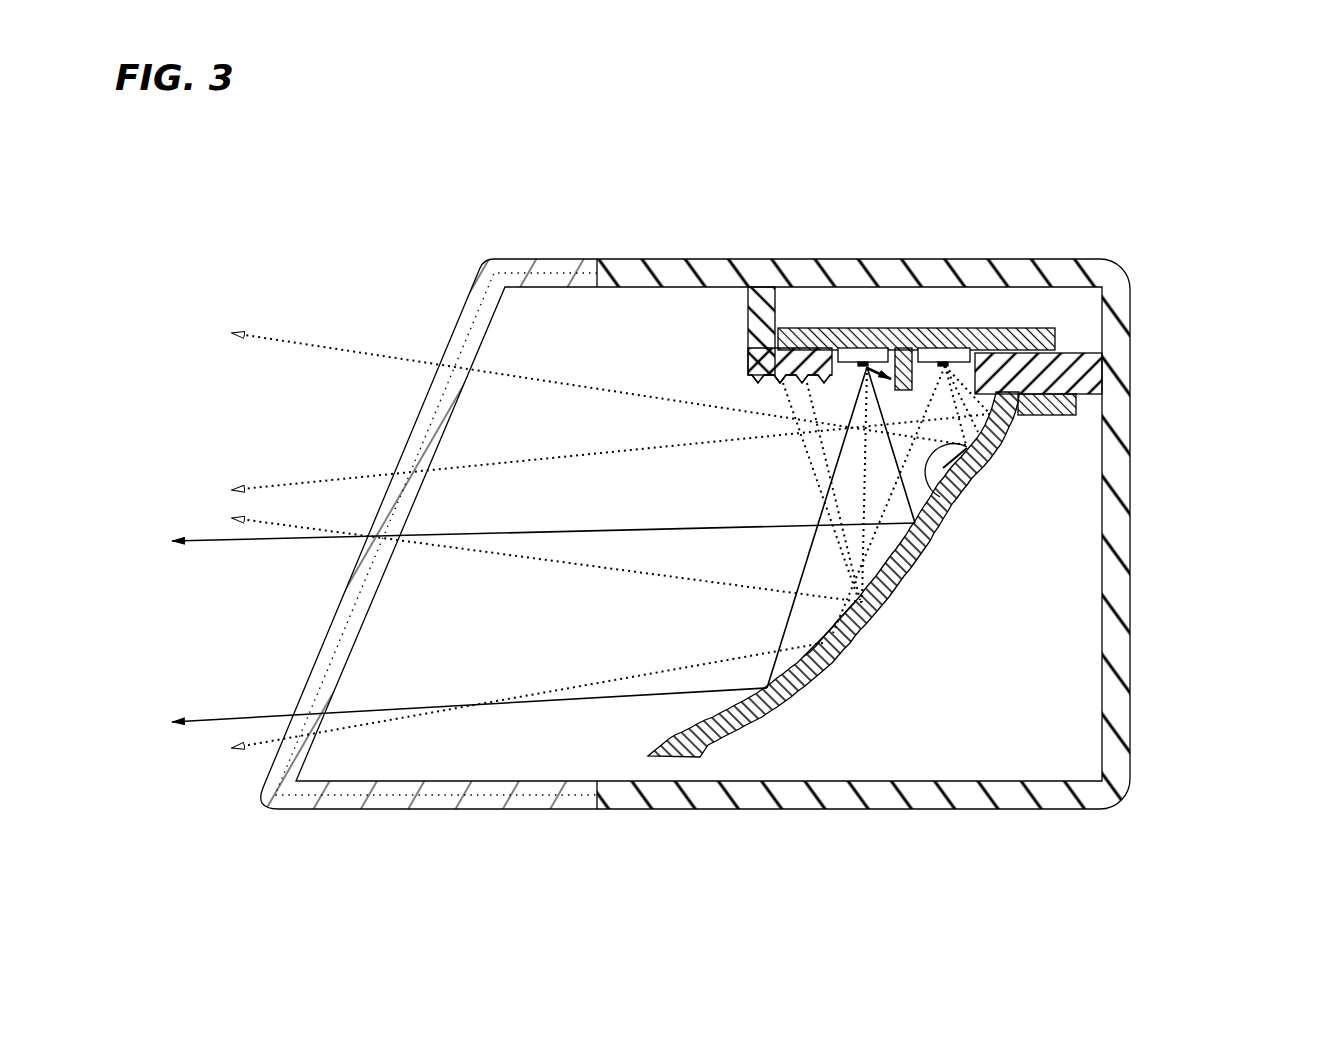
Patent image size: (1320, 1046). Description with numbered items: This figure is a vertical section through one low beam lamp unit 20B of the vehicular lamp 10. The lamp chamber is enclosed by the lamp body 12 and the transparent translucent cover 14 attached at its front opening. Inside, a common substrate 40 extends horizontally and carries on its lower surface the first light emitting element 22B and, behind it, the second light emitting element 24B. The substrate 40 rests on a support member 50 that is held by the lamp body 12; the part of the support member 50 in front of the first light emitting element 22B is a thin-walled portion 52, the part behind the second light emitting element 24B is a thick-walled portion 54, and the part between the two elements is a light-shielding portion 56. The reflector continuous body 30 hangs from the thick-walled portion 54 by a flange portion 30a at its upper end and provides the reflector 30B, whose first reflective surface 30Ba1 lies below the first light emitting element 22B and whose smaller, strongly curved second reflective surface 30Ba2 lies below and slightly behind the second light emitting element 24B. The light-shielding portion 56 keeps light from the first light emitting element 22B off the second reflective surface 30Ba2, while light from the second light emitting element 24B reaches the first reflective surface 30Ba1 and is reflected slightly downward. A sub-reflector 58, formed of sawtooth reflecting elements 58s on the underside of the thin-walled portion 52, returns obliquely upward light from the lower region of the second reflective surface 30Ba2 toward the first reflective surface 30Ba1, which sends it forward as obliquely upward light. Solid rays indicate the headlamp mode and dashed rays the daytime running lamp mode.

The vehicular lamp 10 is at (358, 203).
The lamp body 12 is at (1134, 305).
The translucent cover 14 is at (447, 340).
The lamp unit 20B is at (650, 492).
The first light emitting element 22B is at (872, 335).
The second light emitting element 24B is at (950, 335).
The reflector continuous body 30 is at (861, 576).
The flange portion 30a is at (1035, 415).
The reflector 30B is at (905, 590).
The first reflective surface 30Ba1 is at (834, 628).
The second reflective surface 30Ba2 is at (936, 506).
The substrate 40 is at (1038, 318).
The support member 50 is at (707, 425).
The thin-walled portion 52 is at (793, 333).
The thick-walled portion 54 is at (1085, 375).
The light-shielding portion 56 is at (905, 403).
The sub-reflector 58 is at (810, 386).
The reflecting elements 58s is at (774, 384).